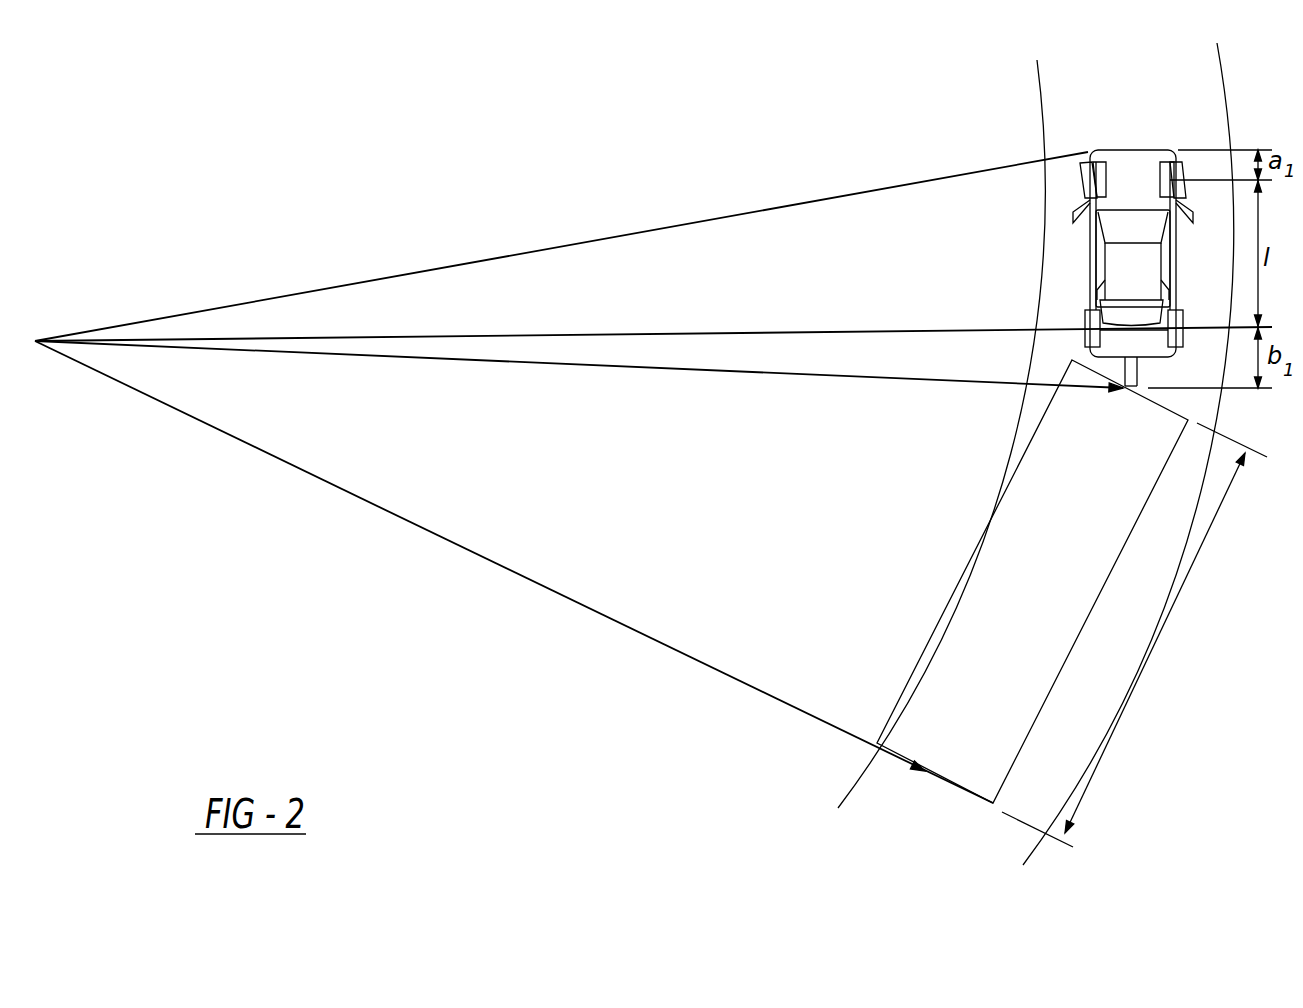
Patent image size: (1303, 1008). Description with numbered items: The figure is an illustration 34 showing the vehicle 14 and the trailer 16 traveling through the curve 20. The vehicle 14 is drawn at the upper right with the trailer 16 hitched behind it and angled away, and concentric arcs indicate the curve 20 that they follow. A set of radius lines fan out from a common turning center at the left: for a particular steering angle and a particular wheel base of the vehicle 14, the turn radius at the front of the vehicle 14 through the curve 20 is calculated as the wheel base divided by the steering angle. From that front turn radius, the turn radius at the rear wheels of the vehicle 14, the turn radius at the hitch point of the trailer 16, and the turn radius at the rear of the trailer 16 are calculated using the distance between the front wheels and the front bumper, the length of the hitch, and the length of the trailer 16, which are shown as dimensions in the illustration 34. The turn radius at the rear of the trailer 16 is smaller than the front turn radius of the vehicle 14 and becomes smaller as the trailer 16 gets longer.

The illustration 34 is at (512, 145).
The vehicle 14 is at (1088, 258).
The trailer 16 is at (948, 597).
The curve 20 is at (1022, 408).